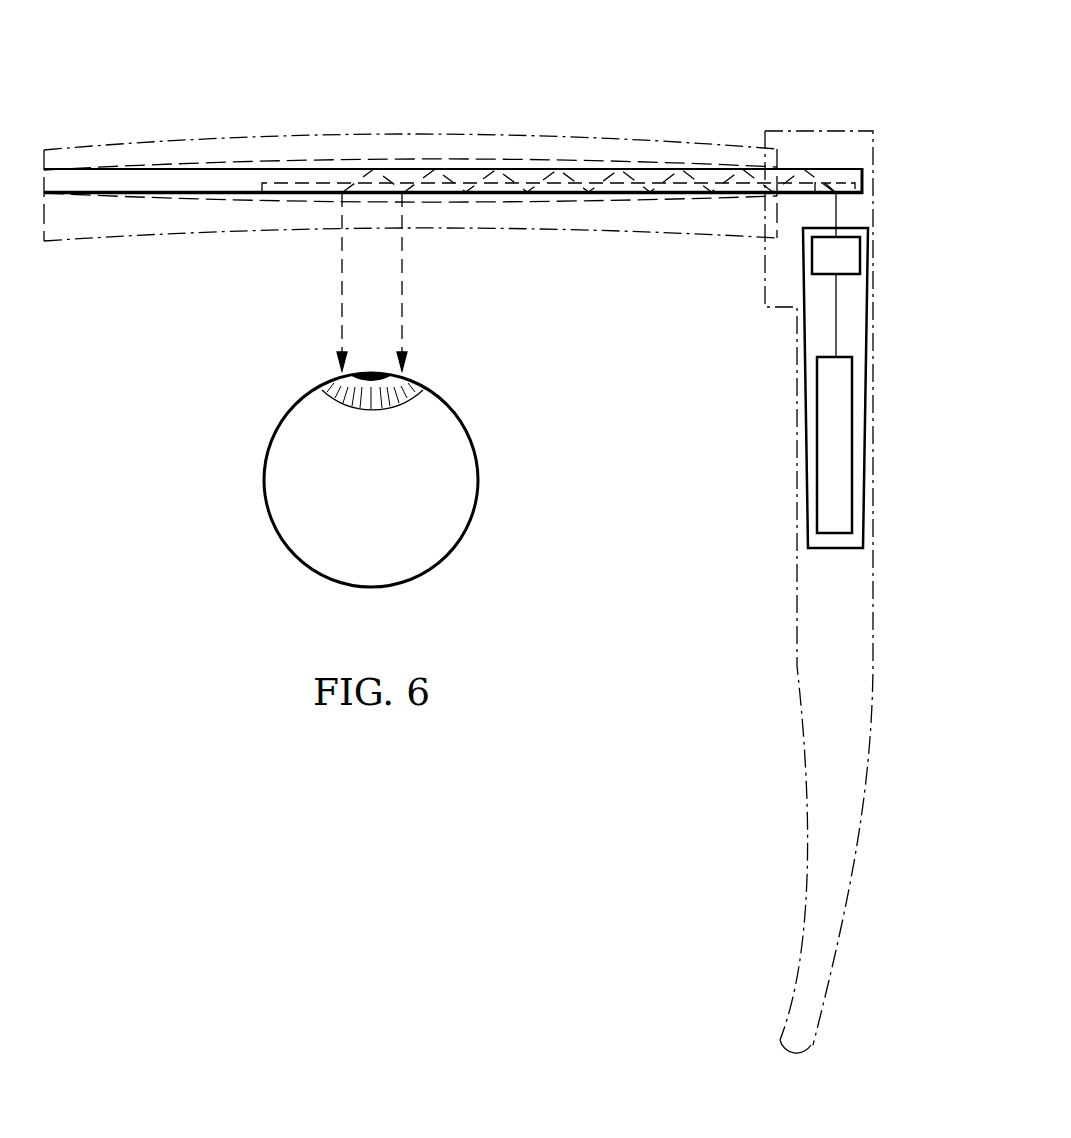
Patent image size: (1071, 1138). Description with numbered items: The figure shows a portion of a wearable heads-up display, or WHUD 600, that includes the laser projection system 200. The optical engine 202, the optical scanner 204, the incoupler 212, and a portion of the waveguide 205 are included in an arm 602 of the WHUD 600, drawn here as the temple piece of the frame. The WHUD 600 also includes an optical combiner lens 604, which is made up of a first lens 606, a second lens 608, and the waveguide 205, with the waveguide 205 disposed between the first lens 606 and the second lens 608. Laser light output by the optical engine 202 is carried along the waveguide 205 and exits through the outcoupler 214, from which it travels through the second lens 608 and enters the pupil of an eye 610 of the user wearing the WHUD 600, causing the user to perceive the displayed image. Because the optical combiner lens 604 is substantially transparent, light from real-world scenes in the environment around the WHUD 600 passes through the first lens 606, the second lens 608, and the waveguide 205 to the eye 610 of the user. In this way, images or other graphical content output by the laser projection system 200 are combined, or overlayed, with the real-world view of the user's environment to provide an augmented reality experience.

The WHUD 600 is at (262, 73).
The optical combiner lens 604 is at (552, 137).
The first lens 606 is at (645, 140).
The second lens 608 is at (180, 233).
The waveguide 205 is at (237, 172).
The outcoupler 214 is at (336, 183).
The incoupler 212 is at (850, 184).
The arm 602 is at (874, 609).
The laser projection system 200 is at (783, 328).
The optical scanner 204 is at (847, 248).
The optical engine 202 is at (842, 458).
The eye 610 is at (273, 527).